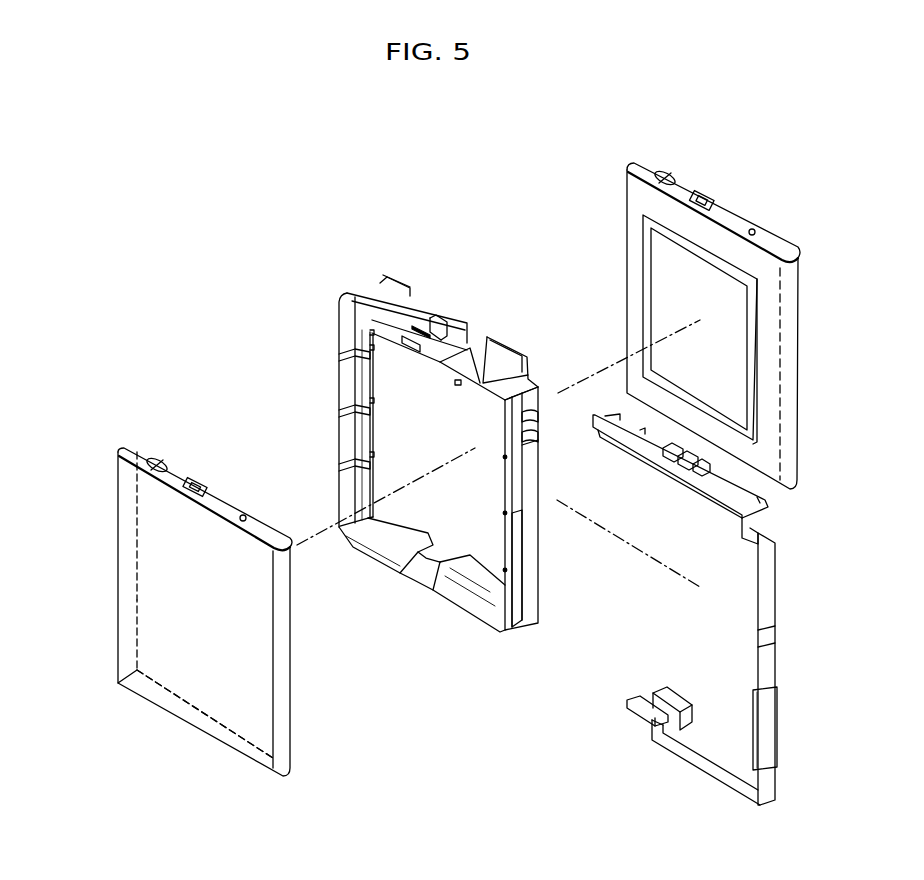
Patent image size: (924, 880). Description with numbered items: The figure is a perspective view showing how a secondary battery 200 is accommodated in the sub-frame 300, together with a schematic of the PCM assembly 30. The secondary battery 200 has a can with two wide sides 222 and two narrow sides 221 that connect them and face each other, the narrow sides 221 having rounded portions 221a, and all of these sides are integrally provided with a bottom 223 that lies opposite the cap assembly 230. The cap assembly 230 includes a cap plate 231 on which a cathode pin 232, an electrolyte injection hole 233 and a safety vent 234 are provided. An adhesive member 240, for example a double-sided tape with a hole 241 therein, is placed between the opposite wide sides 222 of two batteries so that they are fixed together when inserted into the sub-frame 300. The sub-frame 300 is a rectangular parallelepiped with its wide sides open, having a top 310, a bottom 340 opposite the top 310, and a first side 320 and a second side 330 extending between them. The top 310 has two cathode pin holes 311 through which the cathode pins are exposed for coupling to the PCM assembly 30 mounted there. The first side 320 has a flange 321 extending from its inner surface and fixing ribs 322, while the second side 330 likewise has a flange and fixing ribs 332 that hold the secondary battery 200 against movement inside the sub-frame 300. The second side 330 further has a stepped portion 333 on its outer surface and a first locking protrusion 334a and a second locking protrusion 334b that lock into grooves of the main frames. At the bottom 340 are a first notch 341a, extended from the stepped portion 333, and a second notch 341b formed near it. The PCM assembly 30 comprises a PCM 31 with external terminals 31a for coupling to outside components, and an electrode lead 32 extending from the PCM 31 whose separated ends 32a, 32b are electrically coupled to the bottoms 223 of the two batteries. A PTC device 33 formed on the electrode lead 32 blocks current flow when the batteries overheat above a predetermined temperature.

The secondary battery 200 is at (403, 433).
The rounded portions 221a is at (120, 448).
The narrow sides 221 is at (118, 557).
The wide sides 222 is at (140, 601).
The bottom 223 is at (180, 712).
The cap assembly 230 is at (742, 283).
The cap plate 231 is at (735, 217).
The cathode pin 232 is at (703, 190).
The electrolyte injection hole 233 is at (757, 230).
The safety vent 234 is at (668, 168).
The adhesive member 240 is at (753, 352).
The hole 241 is at (693, 308).
The sub-frame 300 is at (425, 437).
The top 310 is at (442, 331).
The cathode pin holes 311 is at (447, 318).
The first side 320 is at (340, 399).
The flange 321 is at (362, 381).
The fixing ribs 322 is at (339, 357).
The second side 330 is at (541, 529).
The fixing ribs 332 is at (505, 457).
The stepped portion 333 is at (513, 547).
The first locking protrusion 334a is at (537, 404).
The second locking protrusion 334b is at (542, 447).
The bottom 340 is at (413, 580).
The first notch 341a is at (415, 578).
The second notch 341b is at (445, 560).
The PCM assembly 30 is at (721, 630).
The PCM 31 is at (715, 479).
The external terminals 31a is at (697, 460).
The electrode lead 32 is at (721, 669).
The end of electrode lead 32a is at (648, 713).
The end of electrode lead 32b is at (675, 703).
The PTC device 33 is at (765, 725).